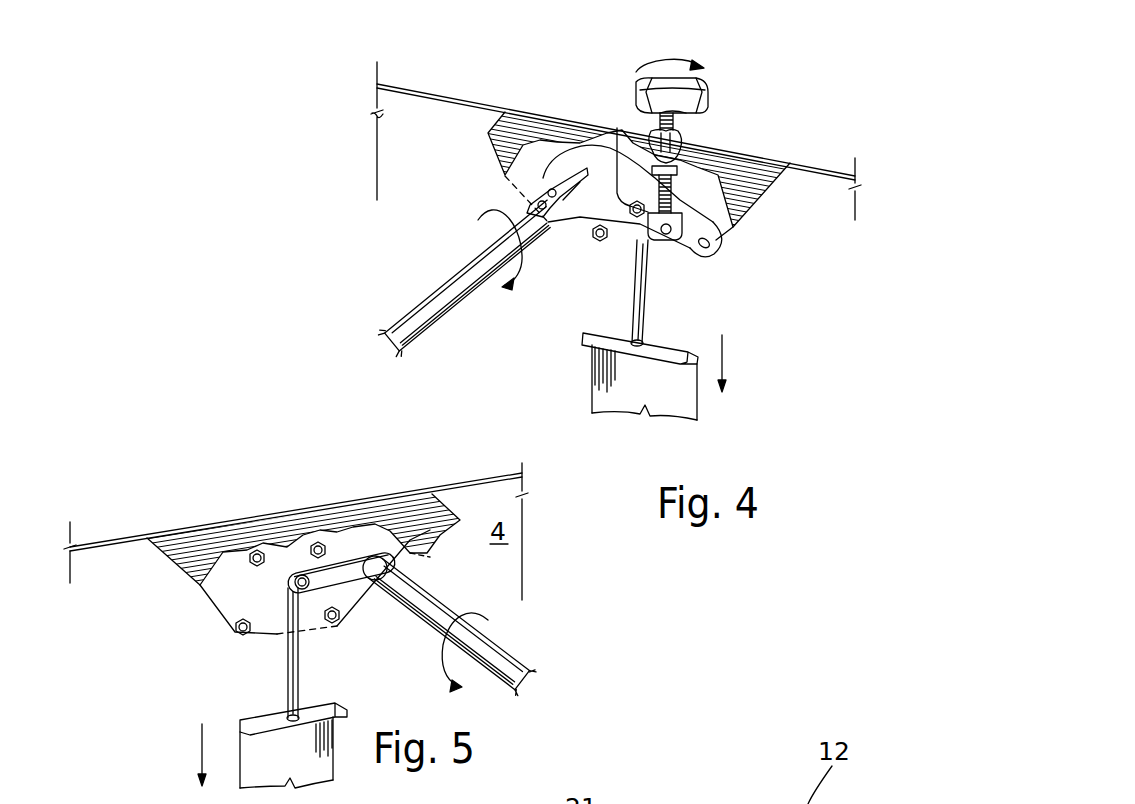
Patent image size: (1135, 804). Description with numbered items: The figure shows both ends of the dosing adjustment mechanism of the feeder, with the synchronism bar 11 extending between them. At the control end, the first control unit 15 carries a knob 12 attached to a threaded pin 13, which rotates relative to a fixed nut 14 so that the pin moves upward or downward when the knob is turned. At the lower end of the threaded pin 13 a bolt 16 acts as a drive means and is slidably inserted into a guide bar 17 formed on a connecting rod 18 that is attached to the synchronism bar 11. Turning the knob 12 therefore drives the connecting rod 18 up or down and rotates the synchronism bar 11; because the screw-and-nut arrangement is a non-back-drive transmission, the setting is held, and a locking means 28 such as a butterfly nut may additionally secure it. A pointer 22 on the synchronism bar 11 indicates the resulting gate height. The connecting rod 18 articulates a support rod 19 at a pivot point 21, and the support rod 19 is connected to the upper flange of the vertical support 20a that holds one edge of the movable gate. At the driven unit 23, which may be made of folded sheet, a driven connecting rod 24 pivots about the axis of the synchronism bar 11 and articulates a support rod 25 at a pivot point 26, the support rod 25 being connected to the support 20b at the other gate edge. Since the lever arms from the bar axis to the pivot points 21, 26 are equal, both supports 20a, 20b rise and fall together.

In FIG. 4, the synchronism bar 11 is at (425, 288).
In FIG. 5, the synchronism bar 11 is at (505, 640).
In FIG. 4, the knob 12 is at (698, 80).
In FIG. 4, the threaded pin 13 is at (686, 128).
In FIG. 4, the fixed nut 14 is at (745, 224).
In FIG. 4, the first control unit 15 is at (580, 117).
In FIG. 4, the bolt 16 is at (665, 252).
In FIG. 4, the guide bar 17 is at (710, 258).
In FIG. 4, the connecting rod 18 is at (597, 198).
In FIG. 4, the support rod 19 is at (632, 278).
In FIG. 4, the support 20a is at (678, 398).
In FIG. 5, the support 20b is at (308, 768).
In FIG. 4, the pivot point 21 is at (607, 200).
In FIG. 4, the pointer 22 is at (547, 183).
In FIG. 5, the driven unit 23 is at (233, 505).
In FIG. 5, the driven connecting rod 24 is at (345, 570).
In FIG. 5, the support rod 25 is at (288, 665).
In FIG. 5, the pivot point 26 is at (292, 578).
In FIG. 4, the locking means 28 is at (700, 152).